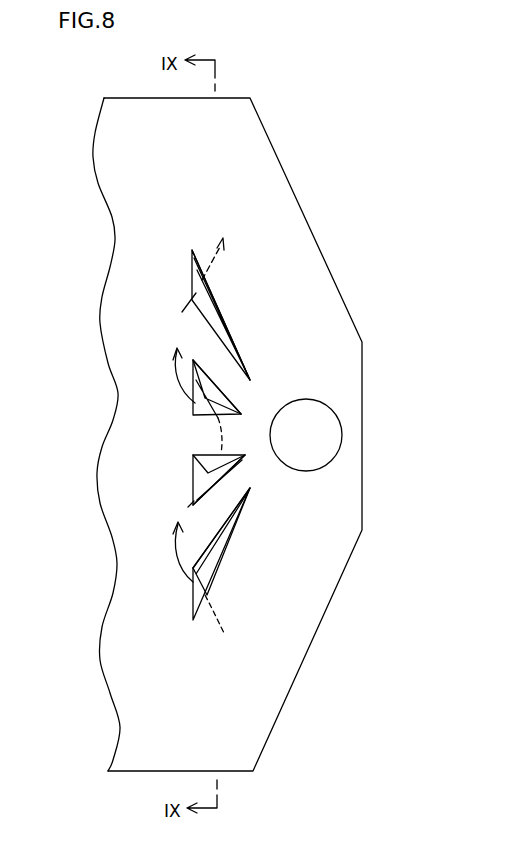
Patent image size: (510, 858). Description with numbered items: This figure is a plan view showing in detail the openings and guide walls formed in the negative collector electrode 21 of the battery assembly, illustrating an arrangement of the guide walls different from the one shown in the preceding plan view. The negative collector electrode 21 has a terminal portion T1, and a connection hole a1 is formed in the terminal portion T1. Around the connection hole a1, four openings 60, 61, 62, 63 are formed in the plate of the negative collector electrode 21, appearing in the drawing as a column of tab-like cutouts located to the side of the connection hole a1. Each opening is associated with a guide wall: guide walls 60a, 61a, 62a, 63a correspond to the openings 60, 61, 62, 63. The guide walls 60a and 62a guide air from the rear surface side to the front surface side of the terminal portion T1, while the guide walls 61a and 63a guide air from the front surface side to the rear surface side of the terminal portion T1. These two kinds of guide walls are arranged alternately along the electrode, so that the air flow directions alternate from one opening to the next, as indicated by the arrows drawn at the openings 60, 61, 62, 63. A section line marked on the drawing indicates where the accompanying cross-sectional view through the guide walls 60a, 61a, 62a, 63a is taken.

The negative collector electrode 21 is at (125, 98).
The opening 60 is at (193, 597).
The opening 61 is at (193, 481).
The opening 62 is at (193, 409).
The opening 63 is at (193, 288).
The guide wall 60a is at (208, 552).
The guide wall 61a is at (245, 455).
The guide wall 62a is at (205, 398).
The guide wall 63a is at (208, 293).
The connection hole a1 is at (334, 441).
The terminal portion T1 is at (347, 491).